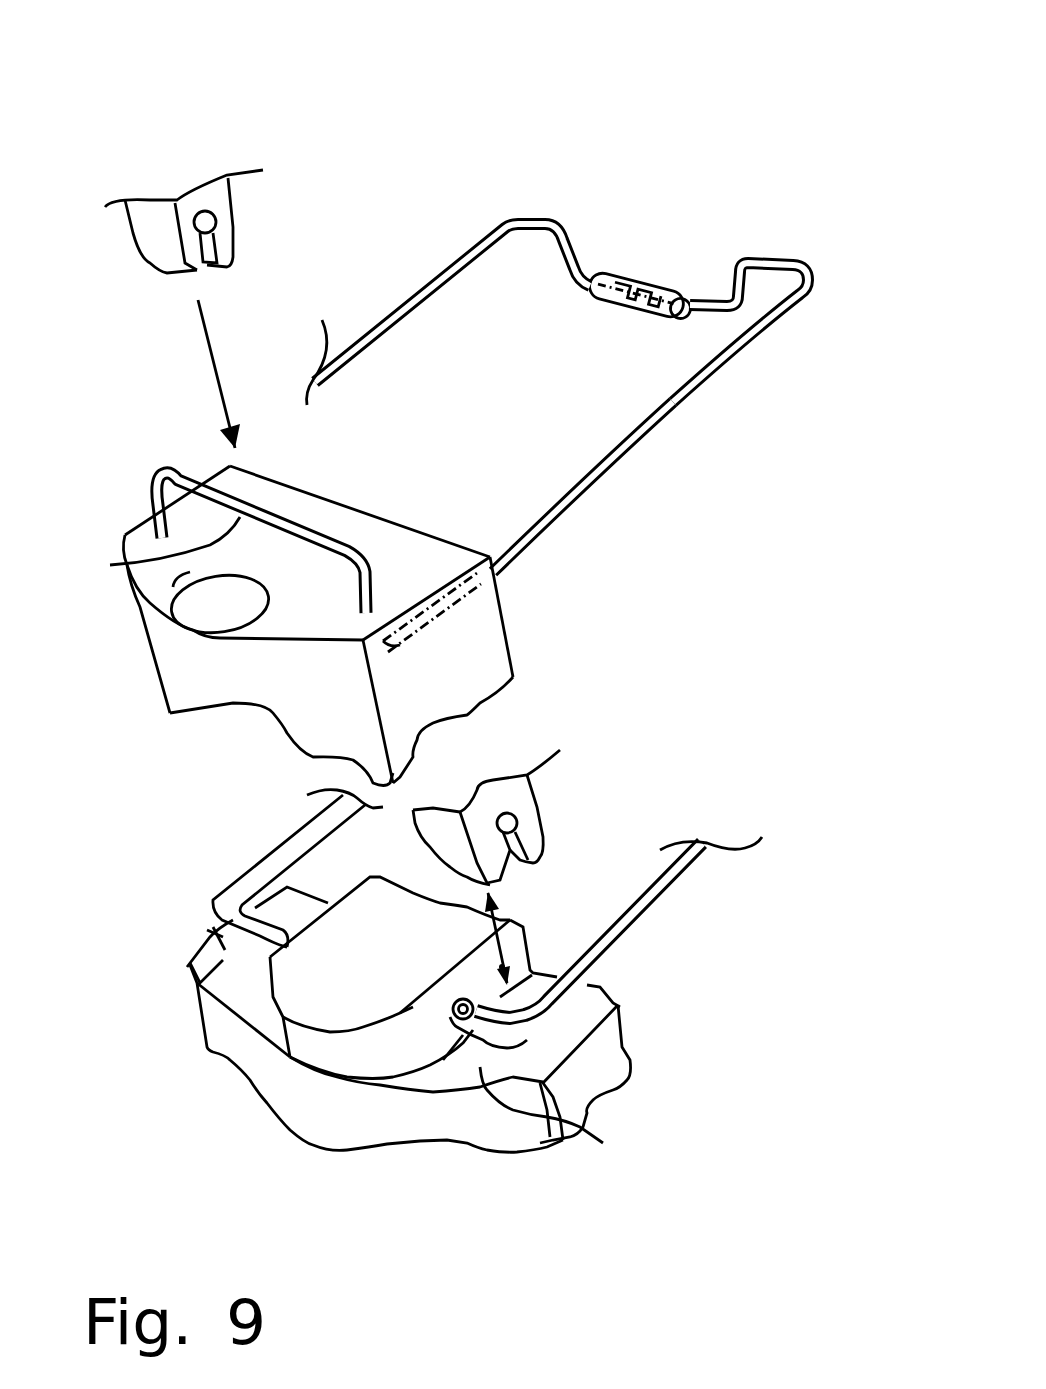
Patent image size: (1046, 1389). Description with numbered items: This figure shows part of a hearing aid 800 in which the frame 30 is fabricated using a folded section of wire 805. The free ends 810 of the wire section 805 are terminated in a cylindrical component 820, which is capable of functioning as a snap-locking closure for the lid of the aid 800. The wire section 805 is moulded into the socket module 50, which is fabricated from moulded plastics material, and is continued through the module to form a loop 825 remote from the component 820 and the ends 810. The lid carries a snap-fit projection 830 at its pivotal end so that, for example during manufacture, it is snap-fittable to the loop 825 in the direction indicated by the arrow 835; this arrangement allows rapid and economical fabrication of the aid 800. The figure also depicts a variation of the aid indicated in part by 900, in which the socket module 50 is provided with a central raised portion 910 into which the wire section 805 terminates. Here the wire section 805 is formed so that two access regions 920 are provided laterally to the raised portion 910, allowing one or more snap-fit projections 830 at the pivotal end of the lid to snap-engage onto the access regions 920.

The hearing aid 800 is at (778, 113).
The wire section 805 is at (693, 390).
The free ends 810 is at (600, 270).
The cylindrical component 820 is at (647, 272).
The loop 825 is at (123, 566).
The snap-fit projection 830 is at (237, 240).
The arrow 835 is at (210, 355).
The frame 30 is at (547, 543).
The socket module 50 is at (350, 706).
The aid variation 900 is at (620, 745).
The central raised portion 910 is at (430, 972).
The access regions 920 is at (223, 960).